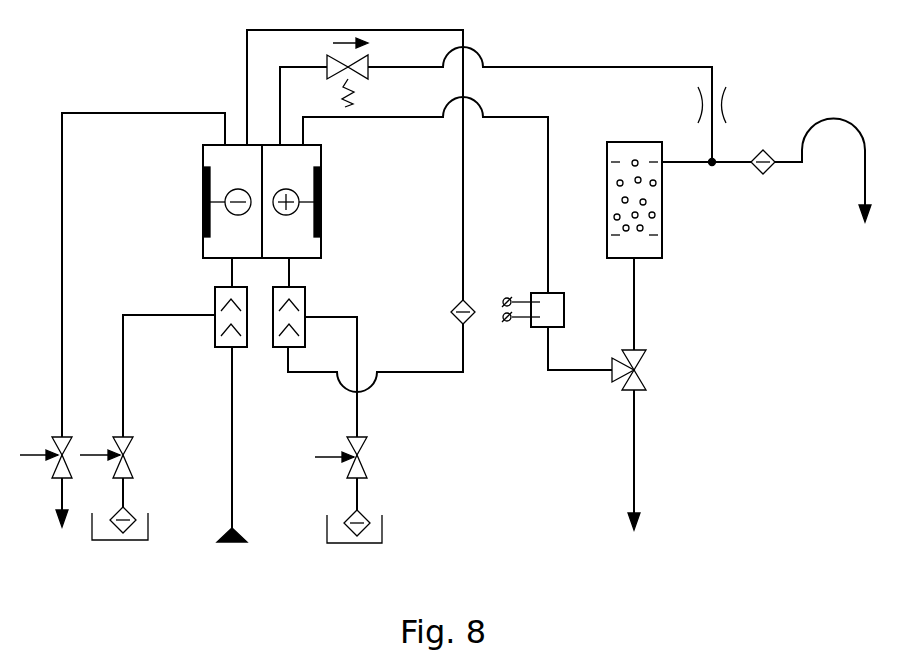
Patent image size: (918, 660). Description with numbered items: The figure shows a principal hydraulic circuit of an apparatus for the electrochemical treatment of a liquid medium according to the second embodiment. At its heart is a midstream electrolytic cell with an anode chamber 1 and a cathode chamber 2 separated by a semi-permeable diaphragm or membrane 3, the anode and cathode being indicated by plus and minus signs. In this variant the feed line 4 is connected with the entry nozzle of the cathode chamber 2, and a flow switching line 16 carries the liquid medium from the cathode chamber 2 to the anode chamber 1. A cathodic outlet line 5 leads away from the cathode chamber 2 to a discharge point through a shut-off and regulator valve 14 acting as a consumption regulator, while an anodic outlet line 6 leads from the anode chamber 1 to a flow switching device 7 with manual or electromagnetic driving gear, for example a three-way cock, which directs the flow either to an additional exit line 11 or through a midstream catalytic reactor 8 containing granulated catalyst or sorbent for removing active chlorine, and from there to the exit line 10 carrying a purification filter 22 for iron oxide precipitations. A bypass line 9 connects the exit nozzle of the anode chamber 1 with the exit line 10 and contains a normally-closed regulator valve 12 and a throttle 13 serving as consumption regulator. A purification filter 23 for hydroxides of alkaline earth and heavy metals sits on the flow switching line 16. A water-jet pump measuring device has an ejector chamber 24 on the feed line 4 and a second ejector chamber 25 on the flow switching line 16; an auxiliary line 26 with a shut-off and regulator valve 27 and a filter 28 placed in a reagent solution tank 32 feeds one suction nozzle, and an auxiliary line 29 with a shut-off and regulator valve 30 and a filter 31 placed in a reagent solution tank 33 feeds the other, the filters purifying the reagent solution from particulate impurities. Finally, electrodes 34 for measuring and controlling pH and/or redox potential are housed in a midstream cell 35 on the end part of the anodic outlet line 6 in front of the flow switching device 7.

The anode chamber 1 is at (287, 167).
The cathode chamber 2 is at (235, 245).
The membrane 3 is at (263, 159).
The feed line 4 is at (232, 372).
The cathodic outlet line 5 is at (80, 113).
The anodic outlet line 6 is at (548, 133).
The flow switching device 7 is at (646, 370).
The catalytic reactor 8 is at (655, 195).
The bypass line 9 is at (640, 72).
The exit line 10 is at (833, 126).
The additional exit line 11 is at (668, 478).
The regulator valve 12 is at (365, 70).
The throttle 13 is at (722, 107).
The shut-off and regulator valve 14 is at (62, 455).
The flow switching line 16 is at (247, 57).
The purification filter 22 is at (765, 174).
The purification filter 23 is at (460, 300).
The ejector chamber 24 is at (215, 297).
The ejector chamber 25 is at (305, 287).
The auxiliary line 26 is at (123, 395).
The shut-off and regulator valve 27 is at (123, 457).
The filter 28 is at (128, 510).
The auxiliary line 29 is at (357, 335).
The shut-off and regulator valve 30 is at (350, 445).
The filter 31 is at (350, 513).
The reagent solution tank 32 is at (115, 541).
The reagent solution tank 33 is at (347, 544).
The electrodes 34 is at (503, 300).
The midstream cell 35 is at (531, 327).